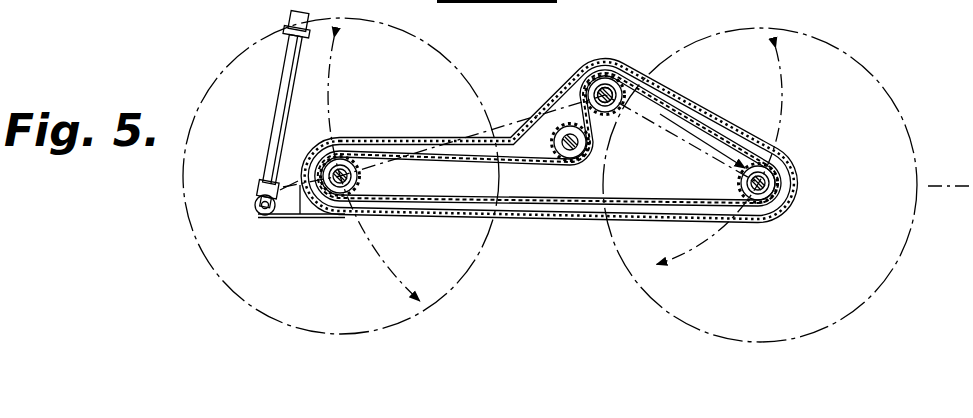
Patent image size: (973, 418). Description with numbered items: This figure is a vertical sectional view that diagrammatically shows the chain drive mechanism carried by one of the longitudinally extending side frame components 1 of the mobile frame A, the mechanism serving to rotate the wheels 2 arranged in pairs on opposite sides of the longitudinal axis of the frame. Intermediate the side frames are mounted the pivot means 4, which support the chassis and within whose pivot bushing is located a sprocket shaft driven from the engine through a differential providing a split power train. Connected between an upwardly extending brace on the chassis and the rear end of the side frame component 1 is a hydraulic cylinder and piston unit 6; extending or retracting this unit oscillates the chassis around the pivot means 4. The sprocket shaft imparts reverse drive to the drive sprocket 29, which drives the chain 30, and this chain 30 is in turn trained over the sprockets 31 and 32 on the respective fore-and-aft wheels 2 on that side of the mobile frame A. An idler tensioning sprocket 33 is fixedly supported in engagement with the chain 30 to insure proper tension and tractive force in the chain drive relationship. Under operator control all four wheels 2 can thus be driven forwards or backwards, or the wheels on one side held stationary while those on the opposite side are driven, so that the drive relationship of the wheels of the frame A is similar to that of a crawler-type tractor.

The side frame component 1 is at (582, 220).
The wheel 2 is at (202, 257).
The pivot means 4 is at (607, 92).
The hydraulic cylinder and piston unit 6 is at (290, 26).
The drive sprocket 29 is at (585, 84).
The chain 30 is at (434, 158).
The sprocket 31 is at (771, 184).
The sprocket 32 is at (343, 193).
The idler tensioning sprocket 33 is at (558, 136).
The mobile frame A is at (530, 223).